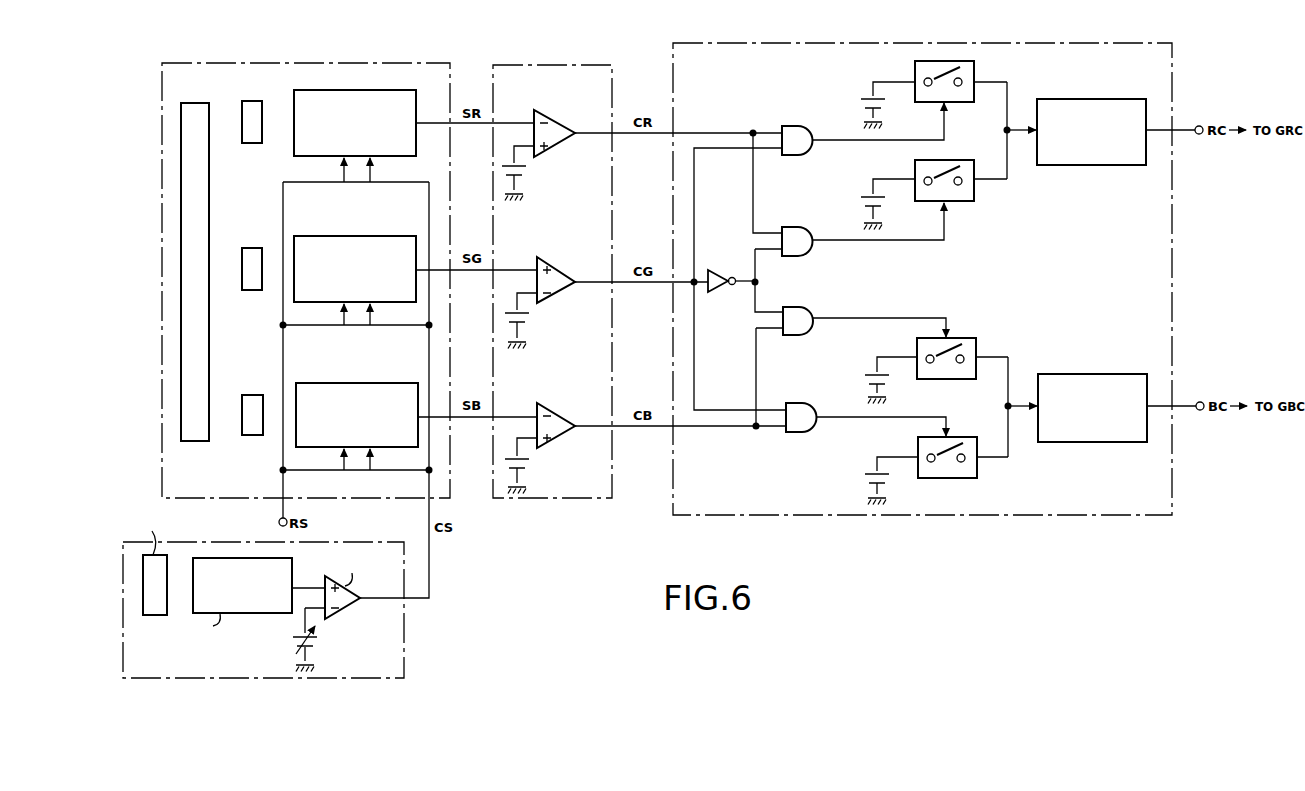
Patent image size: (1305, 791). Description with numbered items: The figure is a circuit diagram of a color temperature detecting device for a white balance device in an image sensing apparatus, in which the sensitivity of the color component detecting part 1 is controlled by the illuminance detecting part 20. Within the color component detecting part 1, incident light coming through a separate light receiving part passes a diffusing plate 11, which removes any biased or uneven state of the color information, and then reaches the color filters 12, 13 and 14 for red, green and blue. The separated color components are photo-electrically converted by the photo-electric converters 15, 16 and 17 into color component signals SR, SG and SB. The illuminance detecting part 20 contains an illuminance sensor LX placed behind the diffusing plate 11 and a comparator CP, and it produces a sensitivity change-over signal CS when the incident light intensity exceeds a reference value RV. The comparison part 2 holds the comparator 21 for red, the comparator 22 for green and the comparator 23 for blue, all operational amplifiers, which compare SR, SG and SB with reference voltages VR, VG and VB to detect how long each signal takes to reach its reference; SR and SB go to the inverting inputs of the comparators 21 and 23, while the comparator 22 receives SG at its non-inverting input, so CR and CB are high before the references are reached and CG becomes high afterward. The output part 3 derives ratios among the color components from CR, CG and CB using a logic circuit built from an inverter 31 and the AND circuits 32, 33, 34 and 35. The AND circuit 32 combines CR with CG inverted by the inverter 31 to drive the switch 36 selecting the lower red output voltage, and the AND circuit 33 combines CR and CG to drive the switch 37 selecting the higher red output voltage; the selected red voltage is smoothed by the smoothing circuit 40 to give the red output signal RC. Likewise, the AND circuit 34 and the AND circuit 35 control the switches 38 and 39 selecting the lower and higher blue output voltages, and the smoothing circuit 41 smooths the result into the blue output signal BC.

The color component detecting part 1 is at (307, 62).
The comparison part 2 is at (551, 65).
The output part 3 is at (888, 43).
The diffusing plate 11 is at (193, 103).
The red color filter 12 is at (255, 101).
The green color filter 13 is at (252, 248).
The blue color filter 14 is at (252, 395).
The photo-electric converter 15 is at (380, 90).
The photo-electric converter 16 is at (349, 236).
The photo-electric converter 17 is at (350, 383).
The illuminance detecting part 20 is at (404, 625).
The comparator 21 is at (562, 120).
The comparator 22 is at (560, 265).
The comparator 23 is at (560, 413).
The inverter 31 is at (712, 270).
The AND circuit 32 is at (795, 227).
The AND circuit 33 is at (795, 126).
The AND circuit 34 is at (800, 307).
The AND circuit 35 is at (800, 403).
The switch 36 is at (965, 202).
The switch 37 is at (966, 102).
The switch 38 is at (962, 378).
The switch 39 is at (980, 465).
The smoothing circuit 40 is at (1068, 99).
The smoothing circuit 41 is at (1083, 374).